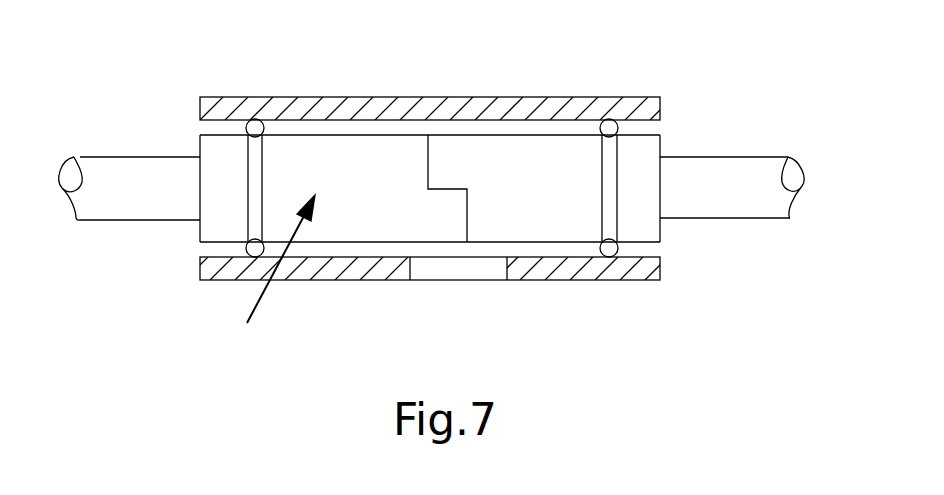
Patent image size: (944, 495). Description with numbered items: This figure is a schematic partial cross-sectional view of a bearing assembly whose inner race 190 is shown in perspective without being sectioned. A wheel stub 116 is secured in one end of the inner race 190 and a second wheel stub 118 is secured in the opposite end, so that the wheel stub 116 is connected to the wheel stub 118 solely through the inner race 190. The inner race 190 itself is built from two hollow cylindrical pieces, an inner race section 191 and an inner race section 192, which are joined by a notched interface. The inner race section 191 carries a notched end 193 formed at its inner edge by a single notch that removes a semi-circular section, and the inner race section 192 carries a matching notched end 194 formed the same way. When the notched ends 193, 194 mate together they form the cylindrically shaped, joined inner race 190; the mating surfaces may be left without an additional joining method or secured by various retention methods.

The wheel stub 116 is at (131, 192).
The wheel stub 118 is at (722, 180).
The inner race 190 is at (264, 281).
The inner race section 191 is at (370, 222).
The inner race section 192 is at (545, 205).
The notched end 193 is at (430, 168).
The notched end 194 is at (465, 218).